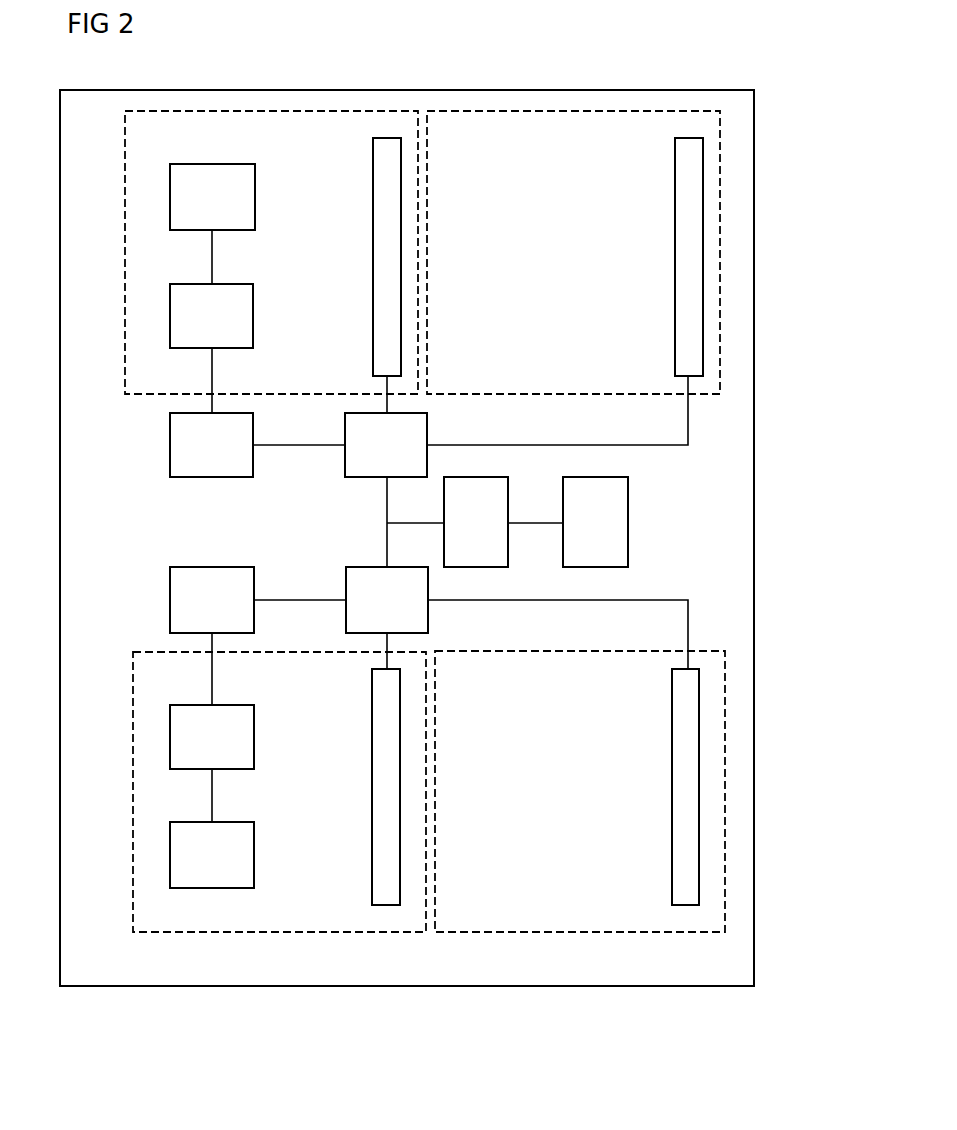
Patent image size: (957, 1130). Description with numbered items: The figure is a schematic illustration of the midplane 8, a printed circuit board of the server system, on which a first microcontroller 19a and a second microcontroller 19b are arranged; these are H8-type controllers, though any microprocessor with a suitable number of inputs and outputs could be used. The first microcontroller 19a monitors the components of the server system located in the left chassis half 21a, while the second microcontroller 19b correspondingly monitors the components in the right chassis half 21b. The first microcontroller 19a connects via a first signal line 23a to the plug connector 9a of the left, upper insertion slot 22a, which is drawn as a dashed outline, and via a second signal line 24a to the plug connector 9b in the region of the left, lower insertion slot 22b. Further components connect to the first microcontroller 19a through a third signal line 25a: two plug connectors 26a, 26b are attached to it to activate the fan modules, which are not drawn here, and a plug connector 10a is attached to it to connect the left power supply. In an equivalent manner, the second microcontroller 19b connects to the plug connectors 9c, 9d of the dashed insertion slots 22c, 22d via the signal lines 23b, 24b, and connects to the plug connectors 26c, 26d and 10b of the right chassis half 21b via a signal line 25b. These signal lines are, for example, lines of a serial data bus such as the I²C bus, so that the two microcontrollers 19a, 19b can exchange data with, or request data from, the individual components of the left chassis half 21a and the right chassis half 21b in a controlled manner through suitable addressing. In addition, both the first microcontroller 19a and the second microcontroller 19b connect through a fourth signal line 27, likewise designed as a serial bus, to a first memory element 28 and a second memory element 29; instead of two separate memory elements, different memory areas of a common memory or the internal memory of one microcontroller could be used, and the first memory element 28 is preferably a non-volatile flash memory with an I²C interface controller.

The midplane 8 is at (449, 90).
The left chassis half 21a is at (628, 1023).
The right chassis half 21b is at (615, 71).
The plug connector 9a is at (372, 852).
The plug connector 9b is at (672, 863).
The plug connector 9c is at (373, 205).
The plug connector 9d is at (675, 205).
The left, upper insertion slot 22a is at (262, 804).
The left, lower insertion slot 22b is at (600, 804).
The insertion slot 22c is at (290, 266).
The insertion slot 22d is at (592, 266).
The plug connector 26a is at (193, 749).
The plug connector 26b is at (193, 867).
The plug connector 26c is at (193, 328).
The plug connector 26d is at (193, 209).
The plug connector 10a is at (193, 612).
The plug connector 10b is at (193, 457).
The first microcontroller 19a is at (368, 612).
The second microcontroller 19b is at (367, 457).
The first signal line 23a is at (383, 655).
The signal line 23b is at (383, 393).
The second signal line 24a is at (505, 598).
The signal line 24b is at (514, 443).
The third signal line 25a is at (267, 598).
The signal line 25b is at (267, 443).
The fourth signal line 27 is at (385, 533).
The first memory element 28 is at (463, 534).
The second memory element 29 is at (582, 534).